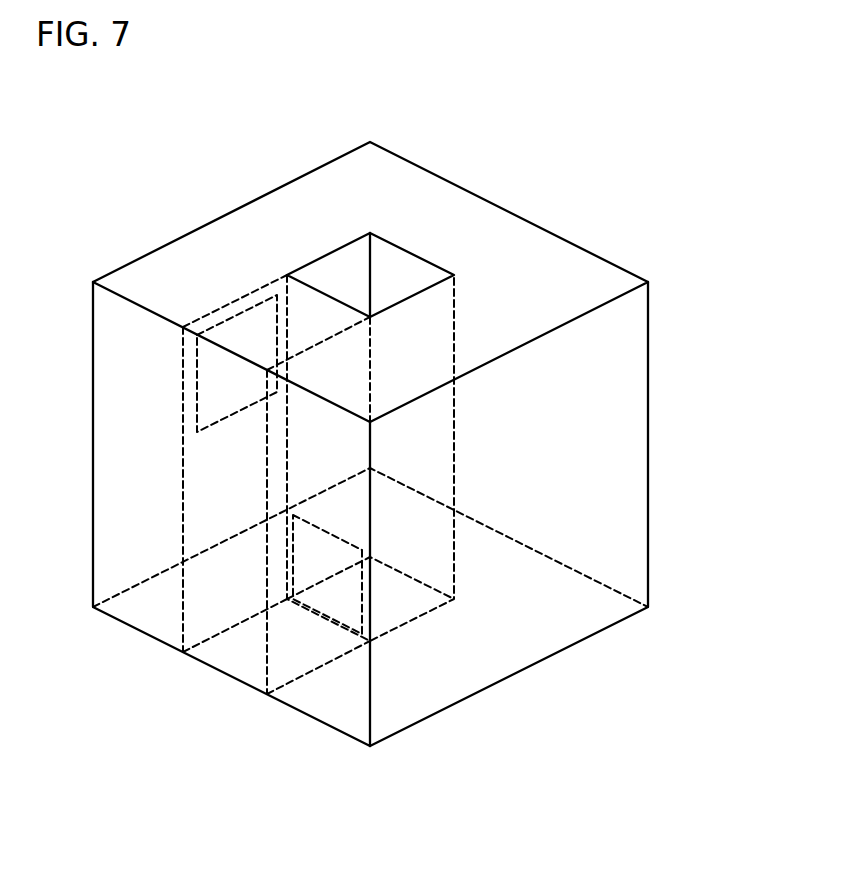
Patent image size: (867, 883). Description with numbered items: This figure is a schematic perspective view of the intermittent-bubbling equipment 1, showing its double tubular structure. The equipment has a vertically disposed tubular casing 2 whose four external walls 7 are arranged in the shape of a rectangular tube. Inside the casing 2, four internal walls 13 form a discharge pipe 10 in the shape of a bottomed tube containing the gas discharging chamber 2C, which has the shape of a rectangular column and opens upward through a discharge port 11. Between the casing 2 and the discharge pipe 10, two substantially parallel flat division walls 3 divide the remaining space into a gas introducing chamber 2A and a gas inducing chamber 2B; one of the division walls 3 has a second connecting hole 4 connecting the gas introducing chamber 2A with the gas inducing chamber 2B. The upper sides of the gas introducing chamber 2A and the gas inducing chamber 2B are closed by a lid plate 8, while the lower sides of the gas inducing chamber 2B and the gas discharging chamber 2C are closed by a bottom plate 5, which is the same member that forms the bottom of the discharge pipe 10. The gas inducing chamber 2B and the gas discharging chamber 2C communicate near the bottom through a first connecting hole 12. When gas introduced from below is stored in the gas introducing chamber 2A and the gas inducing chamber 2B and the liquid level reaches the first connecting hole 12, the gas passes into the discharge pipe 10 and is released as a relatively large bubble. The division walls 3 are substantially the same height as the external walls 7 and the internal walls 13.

The intermittent-bubbling equipment 1 is at (654, 274).
The casing 2 is at (622, 236).
The gas introducing chamber 2A is at (630, 433).
The gas inducing chamber 2B is at (222, 655).
The gas discharging chamber 2C is at (332, 270).
The division wall 3 is at (183, 527).
The second connecting hole 4 is at (196, 412).
The bottom plate 5 is at (326, 660).
The external wall 7 is at (110, 358).
The lid plate 8 is at (286, 199).
The discharge pipe 10 is at (393, 240).
The discharge port 11 is at (355, 237).
The first connecting hole 12 is at (345, 545).
The internal wall 13 is at (306, 273).